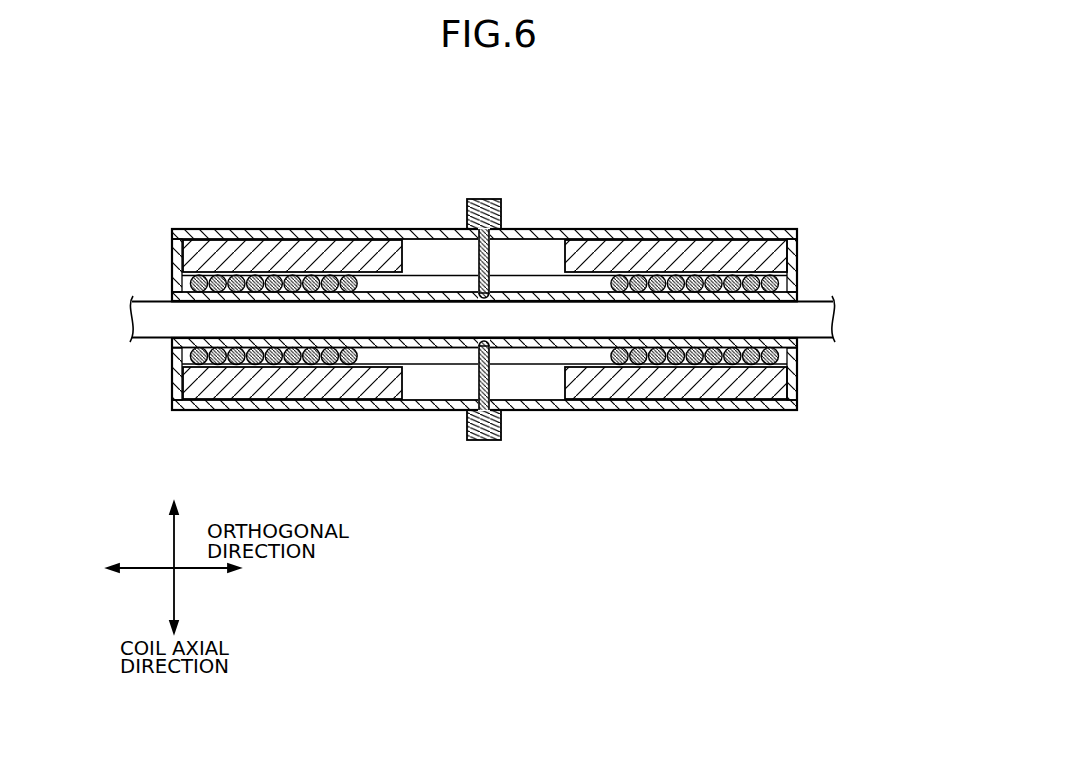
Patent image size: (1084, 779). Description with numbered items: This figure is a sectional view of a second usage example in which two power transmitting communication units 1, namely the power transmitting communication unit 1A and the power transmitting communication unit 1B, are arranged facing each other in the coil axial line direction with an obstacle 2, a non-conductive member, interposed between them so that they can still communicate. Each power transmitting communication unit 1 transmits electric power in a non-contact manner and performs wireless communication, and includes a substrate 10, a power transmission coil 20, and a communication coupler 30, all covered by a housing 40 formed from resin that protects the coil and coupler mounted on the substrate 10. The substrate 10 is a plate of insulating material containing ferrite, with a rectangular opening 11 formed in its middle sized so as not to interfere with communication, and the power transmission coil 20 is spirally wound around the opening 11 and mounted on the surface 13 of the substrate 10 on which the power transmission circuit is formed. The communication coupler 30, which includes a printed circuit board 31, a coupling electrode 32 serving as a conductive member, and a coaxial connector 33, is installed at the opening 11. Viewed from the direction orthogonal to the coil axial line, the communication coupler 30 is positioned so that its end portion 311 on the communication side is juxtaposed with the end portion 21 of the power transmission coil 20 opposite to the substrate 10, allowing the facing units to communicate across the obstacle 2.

The power transmitting communication unit 1 is at (484, 323).
The power transmitting communication unit 1A is at (683, 123).
The power transmitting communication unit 1B is at (656, 492).
The obstacle 2 is at (836, 302).
The substrate 10 is at (176, 246).
The opening 11 is at (383, 268).
The surface 13 is at (180, 278).
The power transmission coil 20 is at (182, 286).
The end portion 21 is at (660, 290).
The communication coupler 30 is at (510, 323).
The printed circuit board 31 is at (510, 323).
The coupling electrode 32 is at (510, 323).
The end portion 311 is at (482, 297).
The coaxial connector 33 is at (484, 199).
The housing 40 is at (258, 229).